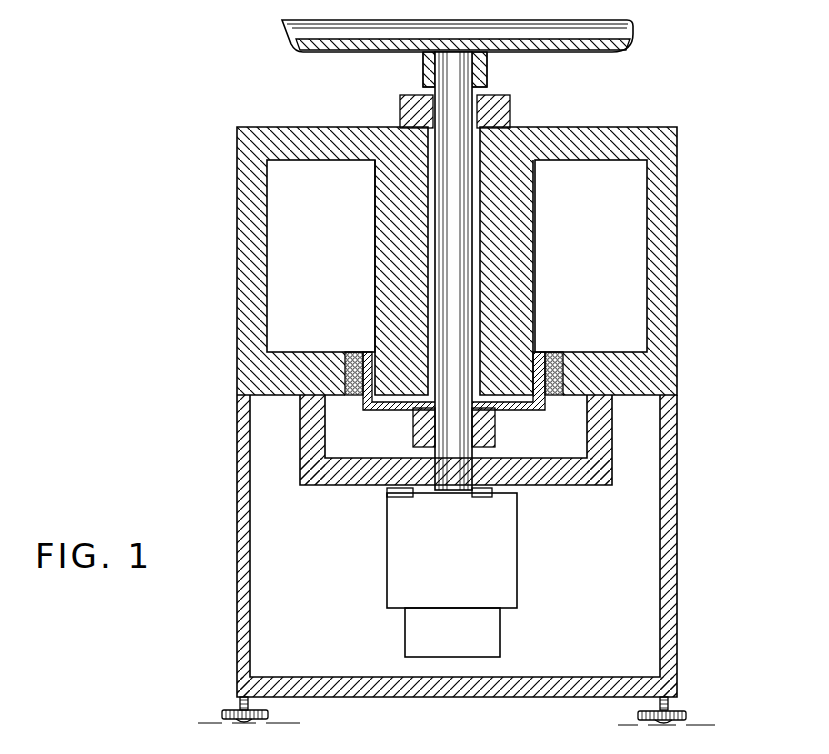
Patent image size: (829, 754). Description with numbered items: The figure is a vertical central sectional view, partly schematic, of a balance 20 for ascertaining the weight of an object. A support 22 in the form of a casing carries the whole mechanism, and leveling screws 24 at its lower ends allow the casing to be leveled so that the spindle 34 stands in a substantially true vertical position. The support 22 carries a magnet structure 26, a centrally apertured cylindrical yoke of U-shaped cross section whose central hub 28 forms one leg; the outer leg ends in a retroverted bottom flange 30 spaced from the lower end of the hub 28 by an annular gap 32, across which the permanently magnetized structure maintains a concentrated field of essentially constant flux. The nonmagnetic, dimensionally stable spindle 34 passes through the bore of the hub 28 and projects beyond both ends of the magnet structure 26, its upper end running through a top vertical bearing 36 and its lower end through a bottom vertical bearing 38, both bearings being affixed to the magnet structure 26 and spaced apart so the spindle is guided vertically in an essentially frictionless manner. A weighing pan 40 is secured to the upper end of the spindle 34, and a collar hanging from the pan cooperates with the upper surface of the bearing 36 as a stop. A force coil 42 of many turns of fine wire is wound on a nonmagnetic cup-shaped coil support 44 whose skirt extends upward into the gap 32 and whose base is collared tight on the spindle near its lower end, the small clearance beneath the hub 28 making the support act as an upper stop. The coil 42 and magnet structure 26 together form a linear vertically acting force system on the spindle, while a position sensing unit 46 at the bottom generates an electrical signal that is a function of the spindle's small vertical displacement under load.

The balance 20 is at (268, 17).
The support 22 is at (670, 539).
The leveling screws 24 is at (232, 711).
The magnet structure 26 is at (680, 226).
The central hub 28 is at (528, 250).
The retroverted bottom flange 30 is at (643, 383).
The annular gap 32 is at (357, 346).
The spindle 34 is at (460, 200).
The top vertical bearing 36 is at (510, 110).
The bottom vertical bearing 38 is at (494, 455).
The weighing pan 40 is at (367, 22).
The force coil 42 is at (549, 351).
The coil support 44 is at (388, 412).
The position sensing unit 46 is at (512, 562).